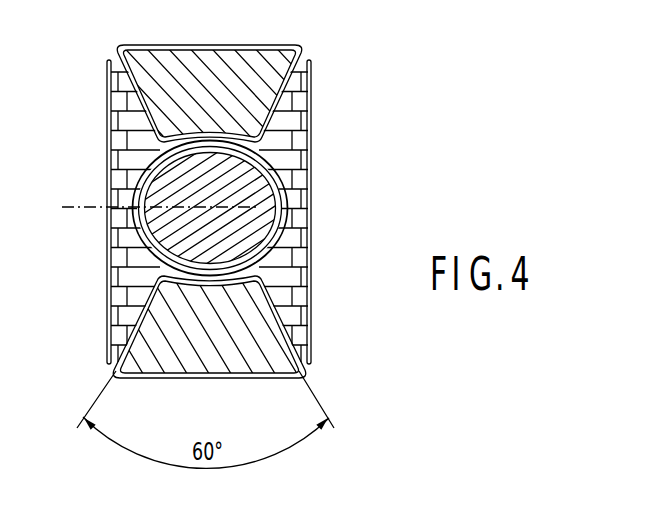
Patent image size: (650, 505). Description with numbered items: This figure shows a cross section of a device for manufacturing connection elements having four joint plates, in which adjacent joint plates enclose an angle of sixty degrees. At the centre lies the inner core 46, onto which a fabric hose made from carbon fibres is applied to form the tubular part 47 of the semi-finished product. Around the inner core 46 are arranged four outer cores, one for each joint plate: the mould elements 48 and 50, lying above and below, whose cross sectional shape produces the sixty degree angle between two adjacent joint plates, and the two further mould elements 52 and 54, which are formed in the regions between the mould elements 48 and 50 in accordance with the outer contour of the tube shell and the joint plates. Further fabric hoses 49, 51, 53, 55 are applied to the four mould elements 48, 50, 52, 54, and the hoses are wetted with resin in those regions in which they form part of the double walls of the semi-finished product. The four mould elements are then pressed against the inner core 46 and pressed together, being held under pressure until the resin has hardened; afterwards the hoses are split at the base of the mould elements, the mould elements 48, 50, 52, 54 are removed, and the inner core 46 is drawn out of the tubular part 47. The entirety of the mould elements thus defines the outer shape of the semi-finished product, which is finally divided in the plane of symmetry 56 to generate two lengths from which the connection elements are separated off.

The inner core 46 is at (268, 152).
The core 47 is at (258, 180).
The outer core 48 is at (168, 66).
The fabric hose 49 is at (249, 47).
The outer core 50 is at (221, 362).
The fabric hose 51 is at (247, 378).
The outer core 52 is at (288, 106).
The fabric hose 53 is at (311, 198).
The outer core 54 is at (118, 121).
The fabric hose 55 is at (107, 257).
The plane of symmetry 56 is at (87, 205).